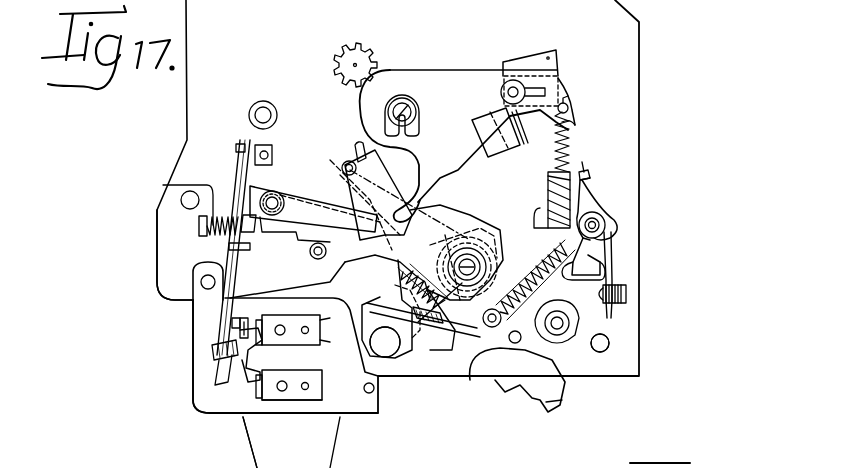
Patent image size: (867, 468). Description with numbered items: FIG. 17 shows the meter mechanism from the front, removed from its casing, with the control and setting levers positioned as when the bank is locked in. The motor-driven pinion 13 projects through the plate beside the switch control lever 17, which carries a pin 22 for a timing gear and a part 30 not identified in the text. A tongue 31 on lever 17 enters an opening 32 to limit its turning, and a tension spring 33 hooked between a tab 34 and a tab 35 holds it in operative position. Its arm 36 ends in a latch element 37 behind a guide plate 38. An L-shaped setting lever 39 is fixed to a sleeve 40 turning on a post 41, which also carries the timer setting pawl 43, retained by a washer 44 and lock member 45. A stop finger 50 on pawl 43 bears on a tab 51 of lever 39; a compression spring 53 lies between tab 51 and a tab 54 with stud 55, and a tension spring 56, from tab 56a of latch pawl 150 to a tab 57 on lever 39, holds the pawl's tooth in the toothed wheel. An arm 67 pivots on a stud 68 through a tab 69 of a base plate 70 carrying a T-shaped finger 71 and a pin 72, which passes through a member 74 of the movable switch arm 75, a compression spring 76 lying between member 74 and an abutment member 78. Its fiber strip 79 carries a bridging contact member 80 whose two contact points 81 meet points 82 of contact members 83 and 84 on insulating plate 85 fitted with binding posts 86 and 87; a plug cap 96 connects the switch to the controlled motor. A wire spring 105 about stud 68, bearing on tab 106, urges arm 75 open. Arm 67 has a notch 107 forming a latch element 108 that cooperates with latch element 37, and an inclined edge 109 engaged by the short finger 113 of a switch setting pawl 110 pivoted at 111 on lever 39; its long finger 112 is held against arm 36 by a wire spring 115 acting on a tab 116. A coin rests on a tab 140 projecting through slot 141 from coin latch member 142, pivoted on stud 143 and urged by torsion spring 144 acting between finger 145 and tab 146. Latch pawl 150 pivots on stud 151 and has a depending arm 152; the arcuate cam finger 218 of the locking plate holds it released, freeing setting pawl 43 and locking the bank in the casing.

The gear wheel 13 is at (352, 50).
The mounting plate 17 is at (455, 78).
The key cylinder 22 is at (514, 80).
The pivot hub 30 is at (405, 100).
The lever arm 31 is at (548, 86).
The cover plate 32 is at (549, 58).
The coil spring 33 is at (574, 150).
The spring hook 34 is at (571, 112).
The latch block 35 is at (540, 210).
The hook arm 36 is at (414, 164).
The slide member 37 is at (364, 216).
The pivot pin 38 is at (342, 166).
The spring 39 is at (430, 348).
The rotor disc 40 is at (490, 270).
The rotor ring 41 is at (480, 250).
The rotor flange 43 is at (486, 258).
The shaft 44 is at (468, 232).
The bushing 45 is at (475, 240).
The tension spring 50 is at (480, 330).
The terminal 51 is at (348, 316).
The switch block 53 is at (285, 316).
The cam plate 54 is at (395, 268).
The cam edge 55 is at (396, 286).
The roller 56 is at (560, 312).
The roller arm 56a is at (598, 244).
The spring anchor 57 is at (490, 345).
The lever pivot 67 is at (315, 200).
The lever tab 68 is at (260, 200).
The lever link 69 is at (290, 230).
The slide bar 70 is at (242, 168).
The bar end 71 is at (236, 148).
The compression spring 72 is at (199, 230).
The bracket 74 is at (226, 250).
The frame wall 75 is at (222, 304).
The frame hole 76 is at (212, 205).
The adjusting screw 78 is at (198, 218).
The contact arm 79 is at (225, 318).
The insulator block 80 is at (215, 356).
The contact 81 is at (232, 332).
The contact spring 82 is at (260, 340).
The switch contact 83 is at (278, 312).
The terminal screw 84 is at (290, 398).
The switch plate 85 is at (192, 392).
The terminal screw 86 is at (281, 333).
The switch block 87 is at (288, 380).
The housing 96 is at (262, 443).
The pivot block 105 is at (282, 155).
The roller 106 is at (278, 125).
The plate edge 107 is at (276, 288).
The lever 108 is at (345, 213).
The pivot pin 109 is at (310, 254).
The terminal 110 is at (352, 325).
The mounting hole 111 is at (386, 355).
The cam lever 112 is at (430, 198).
The cam lever edge 113 is at (436, 216).
The link 115 is at (448, 355).
The bracket 116 is at (414, 320).
The foot 140 is at (596, 270).
The rod 141 is at (622, 289).
The lever arm 142 is at (622, 215).
The pivot 143 is at (602, 226).
The lever arm 144 is at (610, 200).
The lever cap 145 is at (590, 186).
The stop block 146 is at (625, 296).
The hammer 150 is at (555, 176).
The mounting hole 151 is at (575, 345).
The tongue 152 is at (505, 395).
The lip 218 is at (552, 410).